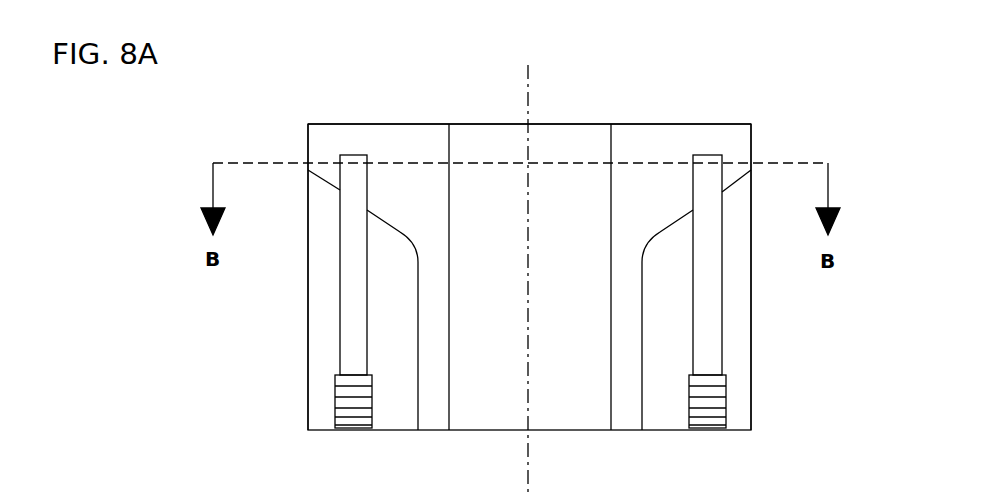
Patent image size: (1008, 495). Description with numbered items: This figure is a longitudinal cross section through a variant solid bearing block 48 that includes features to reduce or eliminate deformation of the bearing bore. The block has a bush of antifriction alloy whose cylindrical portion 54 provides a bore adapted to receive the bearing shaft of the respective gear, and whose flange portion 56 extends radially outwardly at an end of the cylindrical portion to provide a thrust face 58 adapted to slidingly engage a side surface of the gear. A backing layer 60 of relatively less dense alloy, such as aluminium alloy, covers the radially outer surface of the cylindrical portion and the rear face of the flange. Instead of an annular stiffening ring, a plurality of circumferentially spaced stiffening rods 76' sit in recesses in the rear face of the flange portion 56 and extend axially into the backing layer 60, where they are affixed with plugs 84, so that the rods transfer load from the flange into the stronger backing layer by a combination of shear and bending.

The solid bearing block 48 is at (765, 125).
The cylindrical portion 54 is at (434, 336).
The flange portion 56 is at (308, 137).
The thrust face 58 is at (654, 123).
The backing layer 60 is at (730, 318).
The stiffening rods 76' is at (508, 195).
The plugs 84 is at (353, 430).